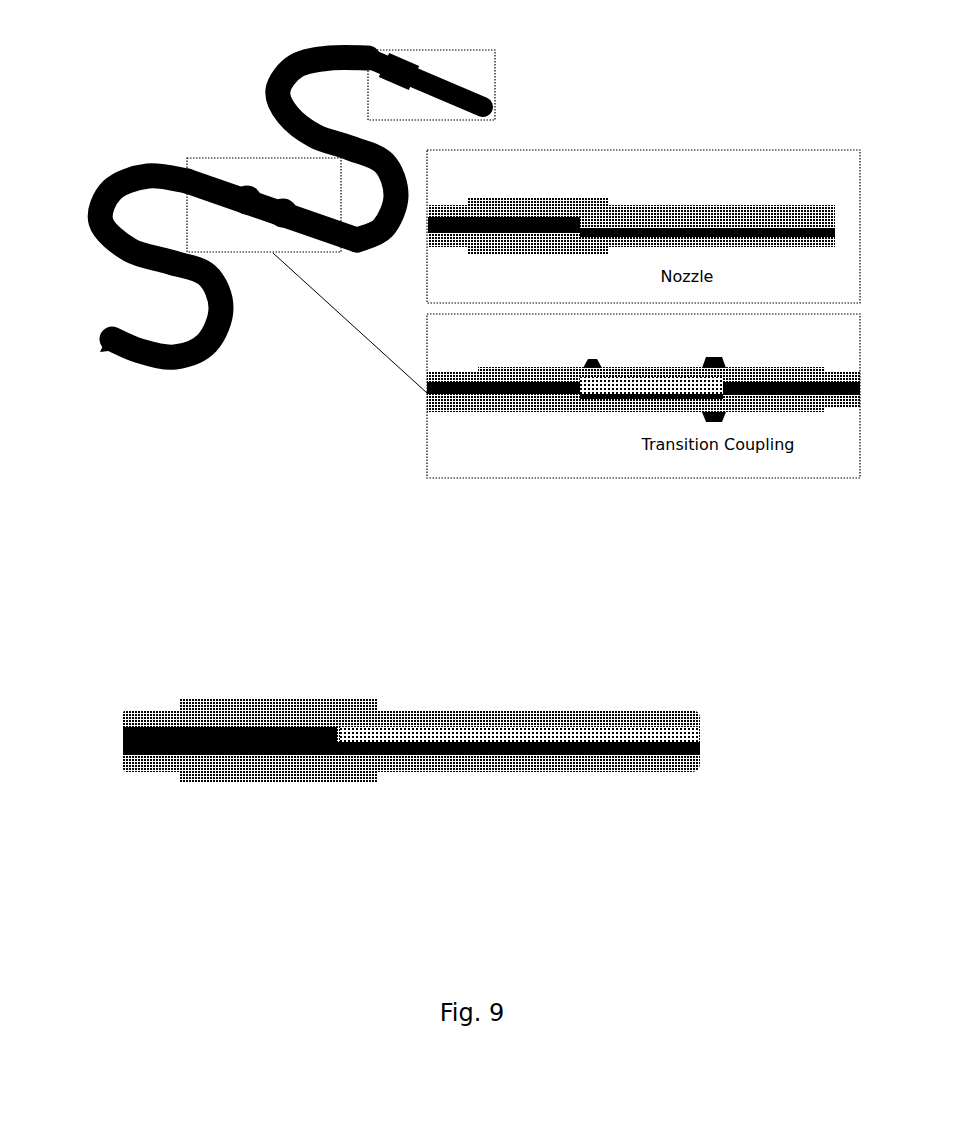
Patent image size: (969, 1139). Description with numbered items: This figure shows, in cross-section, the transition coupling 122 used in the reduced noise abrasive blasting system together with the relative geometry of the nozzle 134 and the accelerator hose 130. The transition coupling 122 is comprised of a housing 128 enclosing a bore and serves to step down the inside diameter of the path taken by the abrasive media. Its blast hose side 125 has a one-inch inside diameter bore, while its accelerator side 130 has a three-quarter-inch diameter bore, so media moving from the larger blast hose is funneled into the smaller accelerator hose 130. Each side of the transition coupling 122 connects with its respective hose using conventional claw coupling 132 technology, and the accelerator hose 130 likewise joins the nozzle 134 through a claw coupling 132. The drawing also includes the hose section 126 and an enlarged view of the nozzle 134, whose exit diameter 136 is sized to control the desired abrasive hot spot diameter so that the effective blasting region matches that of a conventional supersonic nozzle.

The transition coupling 122 is at (240, 155).
The blast hose side 125 is at (98, 188).
The nozzle section of hose 126 is at (275, 67).
The housing 128 is at (623, 407).
The accelerator hose 130 is at (443, 250).
The claw coupling 132 is at (240, 217).
The nozzle 134 is at (712, 200).
The exit diameter 136 is at (534, 743).